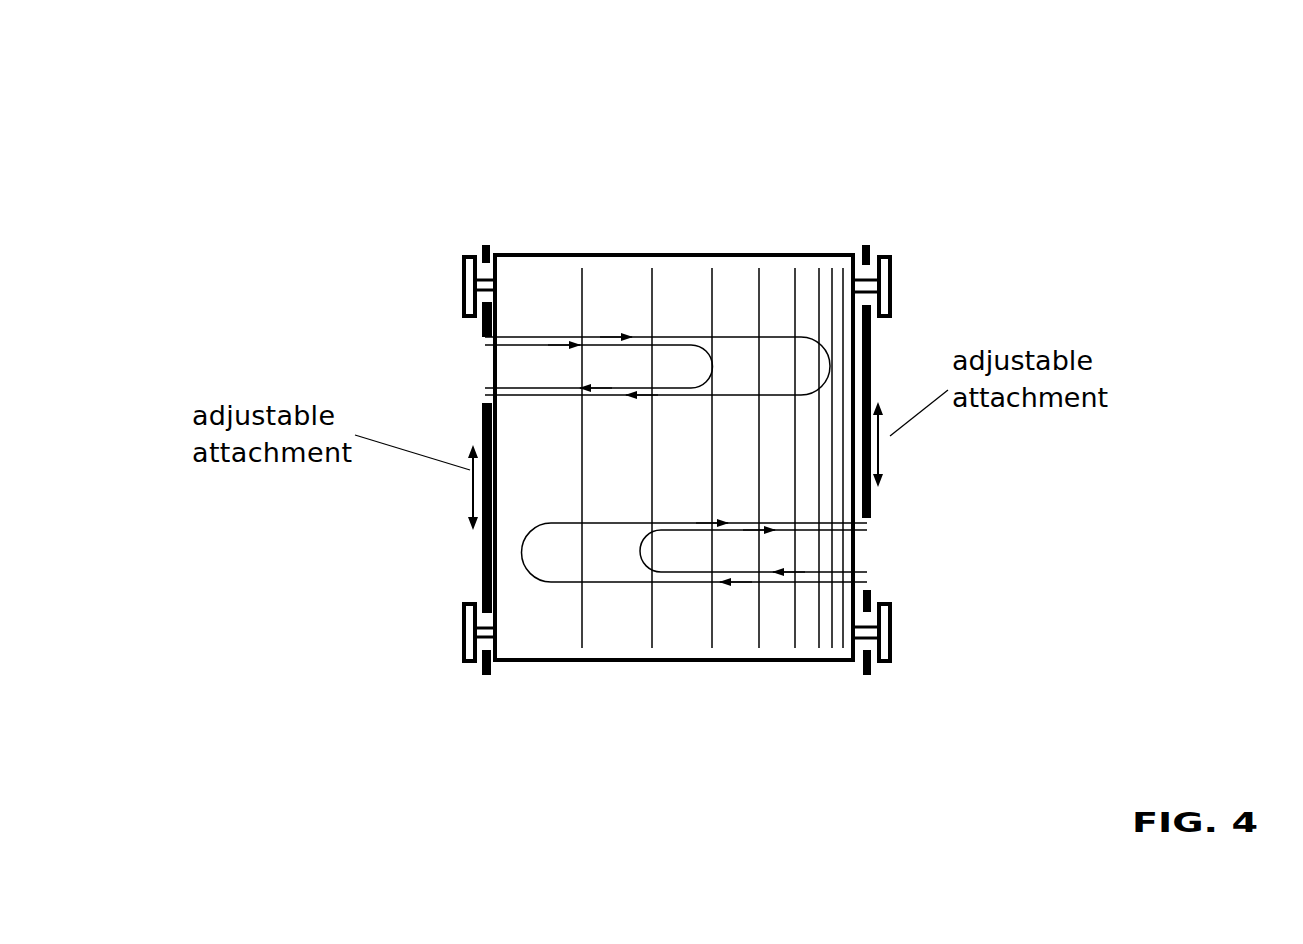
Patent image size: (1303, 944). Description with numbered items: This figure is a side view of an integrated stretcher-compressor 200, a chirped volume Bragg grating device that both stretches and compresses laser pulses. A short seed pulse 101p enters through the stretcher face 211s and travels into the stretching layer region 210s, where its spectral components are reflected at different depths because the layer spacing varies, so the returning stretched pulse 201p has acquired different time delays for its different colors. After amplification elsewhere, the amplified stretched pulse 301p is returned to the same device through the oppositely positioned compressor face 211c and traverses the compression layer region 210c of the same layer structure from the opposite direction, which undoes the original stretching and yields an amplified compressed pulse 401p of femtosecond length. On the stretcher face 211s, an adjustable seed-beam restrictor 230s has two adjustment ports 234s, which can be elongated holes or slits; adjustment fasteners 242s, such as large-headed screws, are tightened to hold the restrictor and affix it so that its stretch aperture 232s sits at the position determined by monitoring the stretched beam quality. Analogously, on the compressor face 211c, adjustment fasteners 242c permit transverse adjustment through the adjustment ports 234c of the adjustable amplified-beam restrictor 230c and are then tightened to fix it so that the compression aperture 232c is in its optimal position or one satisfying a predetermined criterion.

The stretcher-compressor 200 is at (847, 333).
The stretcher face 211s is at (414, 197).
The stretching layer region 210s is at (674, 247).
The adjustment port 234c is at (822, 195).
The stretch aperture 232s is at (356, 310).
The seed pulse 101p is at (657, 347).
The stretched pulse 201p is at (599, 388).
The amplified compressed pulse 401p is at (695, 533).
The amplified stretched pulse 301p is at (728, 574).
The adjustment fasteners 242s is at (276, 459).
The adjustable seed-beam restrictor 230s is at (287, 539).
The adjustment port 234s is at (519, 705).
The compression layer region 210c is at (679, 634).
The compressor face 211c is at (962, 691).
The adjustable amplified-beam restrictor 230c is at (1065, 495).
The compression aperture 232c is at (991, 548).
The adjustment fasteners 242c is at (1063, 459).